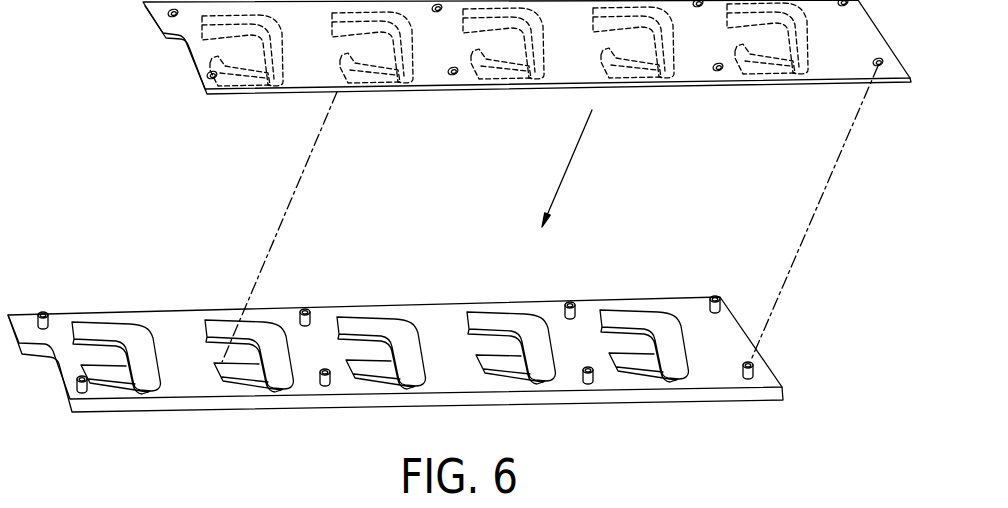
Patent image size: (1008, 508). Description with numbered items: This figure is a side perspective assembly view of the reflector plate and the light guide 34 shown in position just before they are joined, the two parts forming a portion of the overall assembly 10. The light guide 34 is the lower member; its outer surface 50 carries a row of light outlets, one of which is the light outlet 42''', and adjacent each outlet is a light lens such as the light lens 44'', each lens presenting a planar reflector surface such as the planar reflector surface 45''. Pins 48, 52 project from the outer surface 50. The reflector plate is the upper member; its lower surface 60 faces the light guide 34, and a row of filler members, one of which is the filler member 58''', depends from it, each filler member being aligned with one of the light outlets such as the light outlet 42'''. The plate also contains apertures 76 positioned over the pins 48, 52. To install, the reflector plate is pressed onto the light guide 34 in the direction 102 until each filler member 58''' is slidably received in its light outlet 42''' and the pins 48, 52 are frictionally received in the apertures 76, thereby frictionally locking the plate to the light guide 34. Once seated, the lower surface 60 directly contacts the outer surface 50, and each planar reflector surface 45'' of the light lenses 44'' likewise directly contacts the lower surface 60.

The fastening system 10 is at (824, 506).
The light guide 34 is at (727, 334).
The light outlet 42''' is at (272, 331).
The light lens 44'' is at (405, 399).
The planar reflector surface 45'' is at (386, 329).
The pin 48 is at (753, 363).
The outer surface 50 is at (180, 318).
The pin 52 is at (715, 298).
The filler member 58''' is at (337, 72).
The lower surface 60 is at (201, 100).
The aperture 76 is at (882, 63).
The direction 102 is at (567, 167).